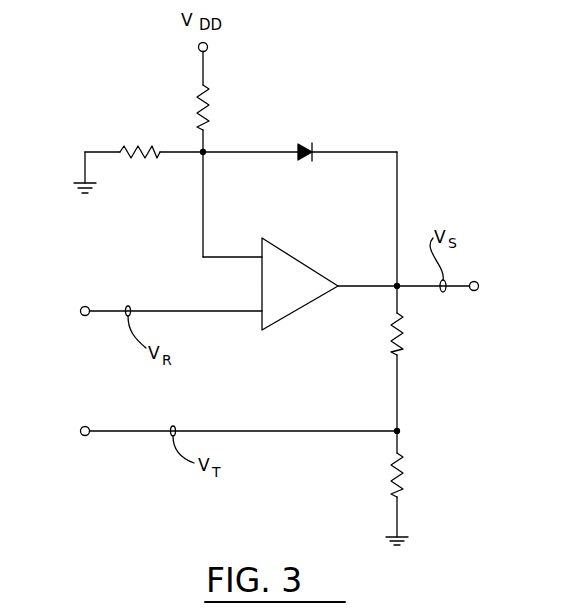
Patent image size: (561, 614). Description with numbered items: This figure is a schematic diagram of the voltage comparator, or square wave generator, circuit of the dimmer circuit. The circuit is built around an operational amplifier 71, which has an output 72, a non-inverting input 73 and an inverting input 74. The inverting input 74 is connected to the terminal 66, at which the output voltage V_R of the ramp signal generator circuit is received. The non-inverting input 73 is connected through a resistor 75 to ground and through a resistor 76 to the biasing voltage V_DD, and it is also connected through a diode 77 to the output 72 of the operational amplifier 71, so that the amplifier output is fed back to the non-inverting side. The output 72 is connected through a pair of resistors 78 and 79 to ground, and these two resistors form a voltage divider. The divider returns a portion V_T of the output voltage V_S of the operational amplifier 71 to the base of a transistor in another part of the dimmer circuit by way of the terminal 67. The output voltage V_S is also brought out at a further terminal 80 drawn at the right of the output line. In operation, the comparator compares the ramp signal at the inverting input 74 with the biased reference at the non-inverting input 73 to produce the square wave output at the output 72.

The terminal 66 is at (68, 311).
The terminal 67 is at (221, 431).
The operational amplifier 71 is at (308, 266).
The output 72 is at (342, 290).
The non-inverting input 73 is at (259, 250).
The inverting input 74 is at (258, 318).
The resistor 75 is at (143, 146).
The resistor 76 is at (210, 104).
The diode 77 is at (305, 142).
The resistor 78 is at (404, 330).
The resistor 79 is at (404, 466).
The output terminal 80 is at (488, 287).